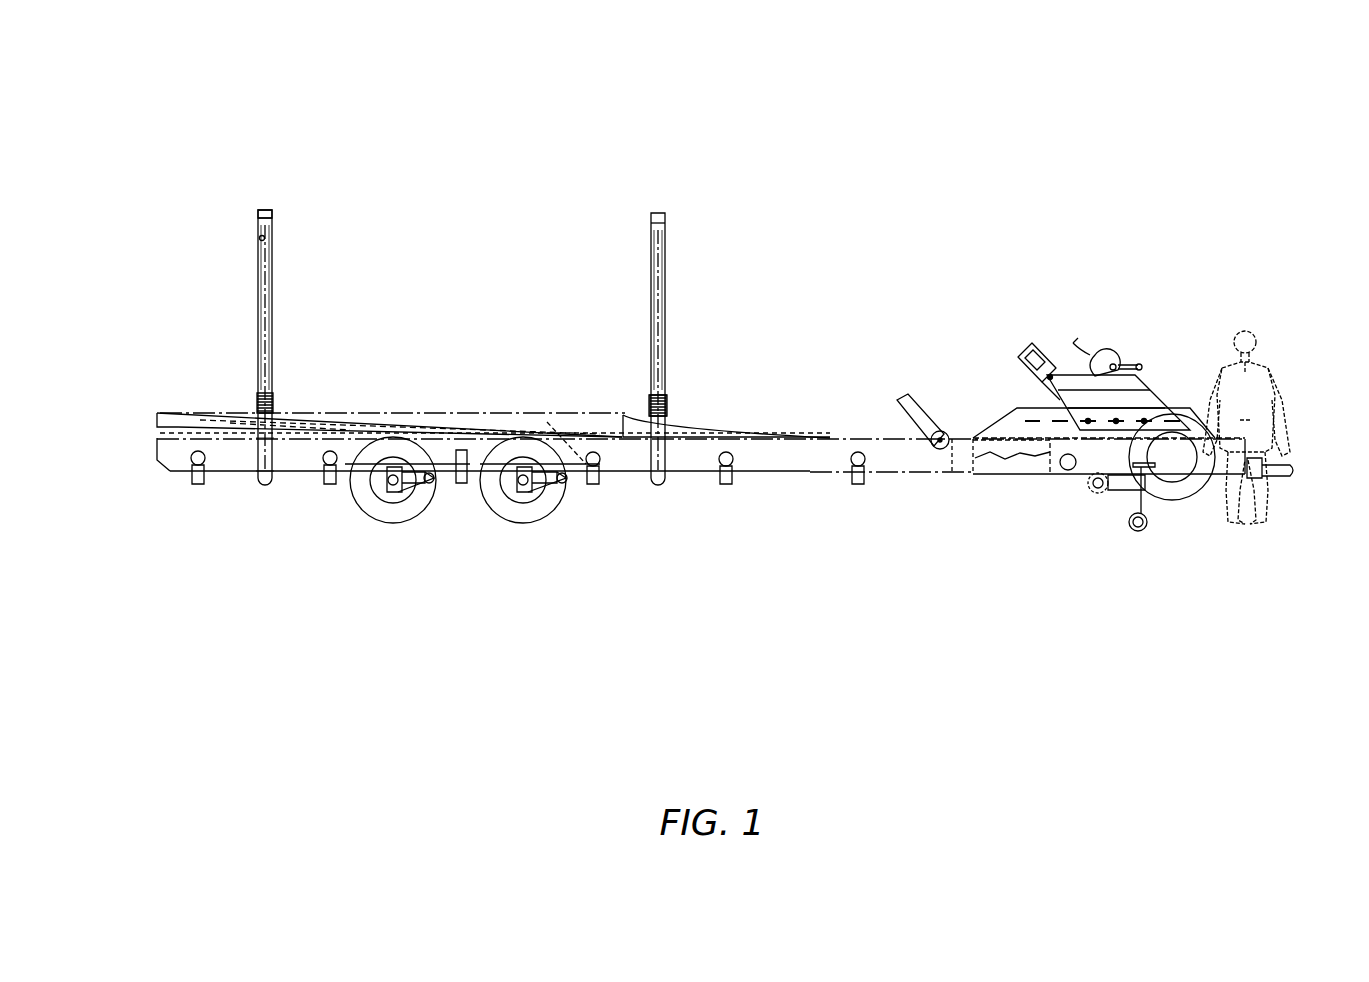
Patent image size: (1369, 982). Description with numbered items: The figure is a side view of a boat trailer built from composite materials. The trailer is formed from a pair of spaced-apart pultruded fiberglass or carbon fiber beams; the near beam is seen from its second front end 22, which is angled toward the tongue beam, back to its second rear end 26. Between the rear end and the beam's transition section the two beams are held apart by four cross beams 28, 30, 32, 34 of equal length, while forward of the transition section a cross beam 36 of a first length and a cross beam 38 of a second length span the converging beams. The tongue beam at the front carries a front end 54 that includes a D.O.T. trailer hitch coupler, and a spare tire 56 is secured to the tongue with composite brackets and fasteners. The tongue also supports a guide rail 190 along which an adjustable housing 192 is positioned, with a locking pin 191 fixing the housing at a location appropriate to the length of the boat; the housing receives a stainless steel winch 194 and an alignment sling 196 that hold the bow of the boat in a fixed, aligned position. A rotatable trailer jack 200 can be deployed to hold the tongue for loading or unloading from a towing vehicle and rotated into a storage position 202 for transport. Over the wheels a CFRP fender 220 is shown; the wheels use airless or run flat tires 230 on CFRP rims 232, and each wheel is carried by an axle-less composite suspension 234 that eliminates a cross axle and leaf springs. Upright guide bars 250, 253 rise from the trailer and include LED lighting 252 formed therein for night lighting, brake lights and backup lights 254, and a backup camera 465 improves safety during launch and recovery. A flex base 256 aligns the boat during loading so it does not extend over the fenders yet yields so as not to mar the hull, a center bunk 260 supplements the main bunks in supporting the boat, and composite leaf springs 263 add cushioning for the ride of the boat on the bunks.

The second front end 22 is at (898, 458).
The second rear end 26 is at (156, 445).
The cross beam 28 is at (198, 477).
The cross beam 30 is at (327, 481).
The cross beam 32 is at (460, 485).
The cross beam 34 is at (593, 486).
The cross beam 36 is at (728, 480).
The cross beam 38 is at (858, 478).
The front end 54 is at (1265, 468).
The spare tire 56 is at (1172, 460).
The guide rail 190 is at (1002, 410).
The locking pin 191 is at (1050, 423).
The adjustable housing 192 is at (1123, 398).
The winch 194 is at (1107, 360).
The alignment sling 196 is at (1040, 375).
The rotatable trailer jack 200 is at (1124, 484).
The storage position 202 is at (1139, 532).
The fender 220 is at (443, 430).
The tires 230 is at (495, 504).
The rims 232 is at (518, 502).
The composite suspension 234 is at (532, 490).
The guide bar 250 is at (264, 486).
The LED lighting 252 is at (262, 302).
The guide bar 253 is at (658, 237).
The backup lights 254 is at (265, 228).
The flex base 256 is at (662, 402).
The center bunk 260 is at (370, 417).
The leaf springs 263 is at (303, 428).
The backup camera 465 is at (258, 240).